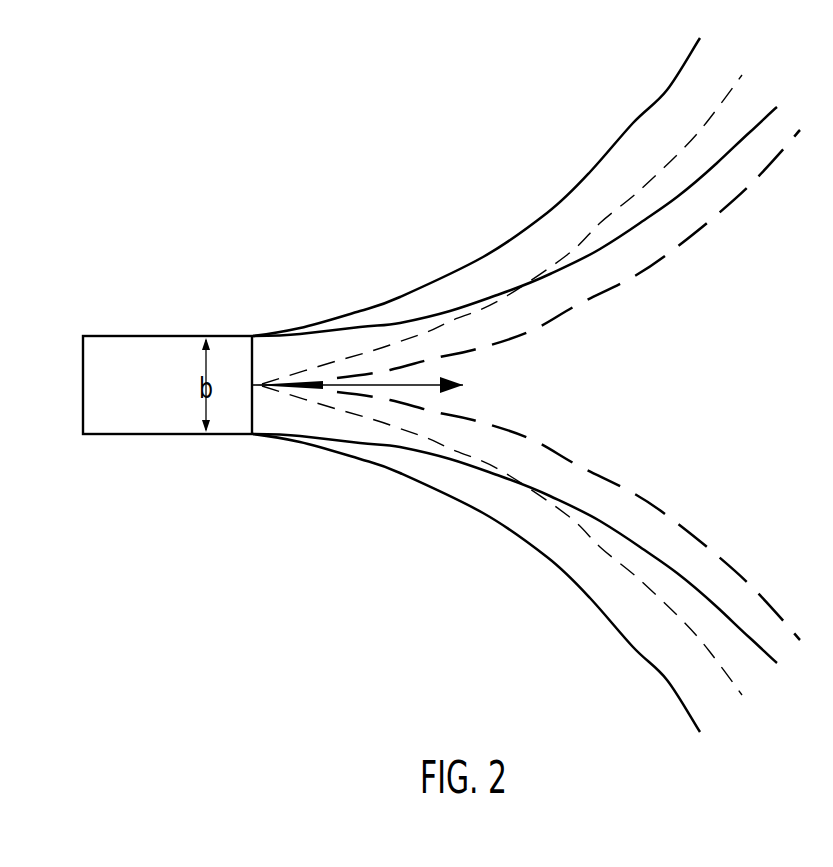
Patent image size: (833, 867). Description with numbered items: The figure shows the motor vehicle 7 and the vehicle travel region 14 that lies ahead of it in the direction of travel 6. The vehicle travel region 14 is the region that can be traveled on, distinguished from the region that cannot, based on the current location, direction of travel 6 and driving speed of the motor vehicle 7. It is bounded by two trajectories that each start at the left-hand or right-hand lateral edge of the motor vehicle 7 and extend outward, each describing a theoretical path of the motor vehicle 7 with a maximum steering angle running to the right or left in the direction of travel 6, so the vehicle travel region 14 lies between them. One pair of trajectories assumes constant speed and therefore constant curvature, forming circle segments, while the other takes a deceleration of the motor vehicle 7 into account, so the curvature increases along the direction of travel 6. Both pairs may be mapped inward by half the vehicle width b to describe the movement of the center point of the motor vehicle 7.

The direction of travel 6 is at (363, 385).
The motor vehicle 7 is at (156, 403).
The vehicle travel region 14 is at (717, 401).